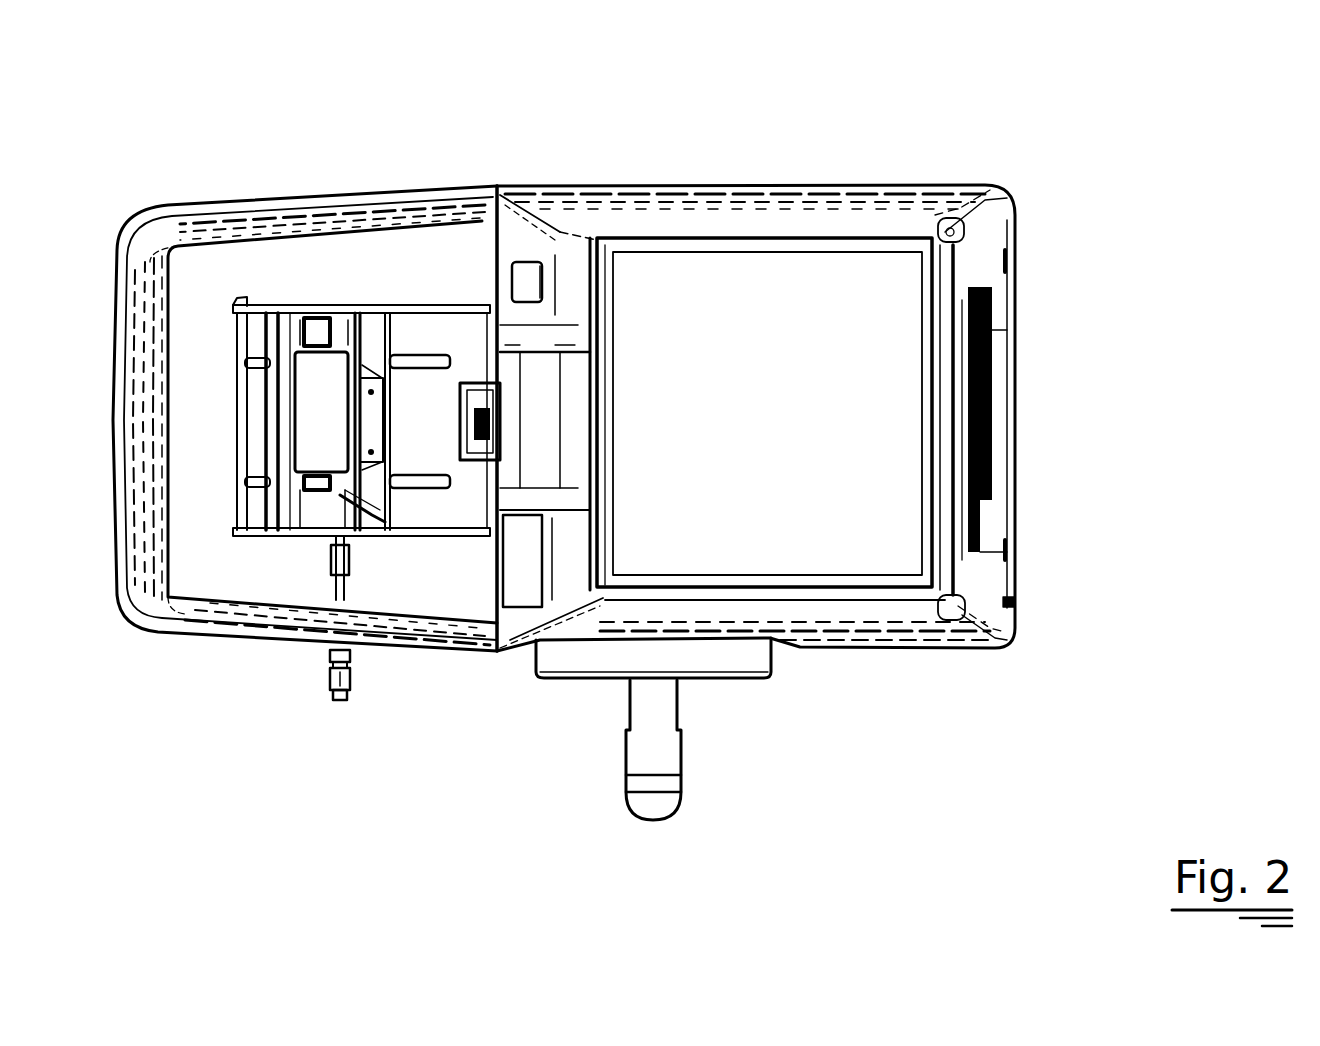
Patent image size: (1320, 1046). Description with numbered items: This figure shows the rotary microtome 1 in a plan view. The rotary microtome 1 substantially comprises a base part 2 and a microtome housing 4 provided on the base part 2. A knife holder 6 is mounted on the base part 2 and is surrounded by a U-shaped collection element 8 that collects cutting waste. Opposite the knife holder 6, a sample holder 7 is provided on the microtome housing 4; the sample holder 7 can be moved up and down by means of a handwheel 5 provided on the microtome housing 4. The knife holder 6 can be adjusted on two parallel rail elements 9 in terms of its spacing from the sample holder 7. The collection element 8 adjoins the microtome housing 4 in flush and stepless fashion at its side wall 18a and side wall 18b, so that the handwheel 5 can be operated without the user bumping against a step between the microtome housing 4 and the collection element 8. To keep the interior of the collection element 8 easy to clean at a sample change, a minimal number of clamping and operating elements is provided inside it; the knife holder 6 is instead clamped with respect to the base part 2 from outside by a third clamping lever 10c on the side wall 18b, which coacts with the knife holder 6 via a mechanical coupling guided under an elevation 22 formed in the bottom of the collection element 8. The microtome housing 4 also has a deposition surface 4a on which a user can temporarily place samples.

The rotary microtome 1 is at (594, 417).
The base part 2 is at (468, 338).
The microtome housing 4 is at (992, 243).
The deposition surface 4a is at (846, 418).
The handwheel 5 is at (710, 670).
The knife holder 6 is at (273, 403).
The sample holder 7 is at (482, 403).
The collection element 8 is at (305, 414).
The rail elements 9 is at (435, 470).
The third clamping lever 10c is at (353, 683).
The side wall 18a is at (365, 205).
The side wall 18b is at (265, 647).
The elevation 22 is at (313, 289).